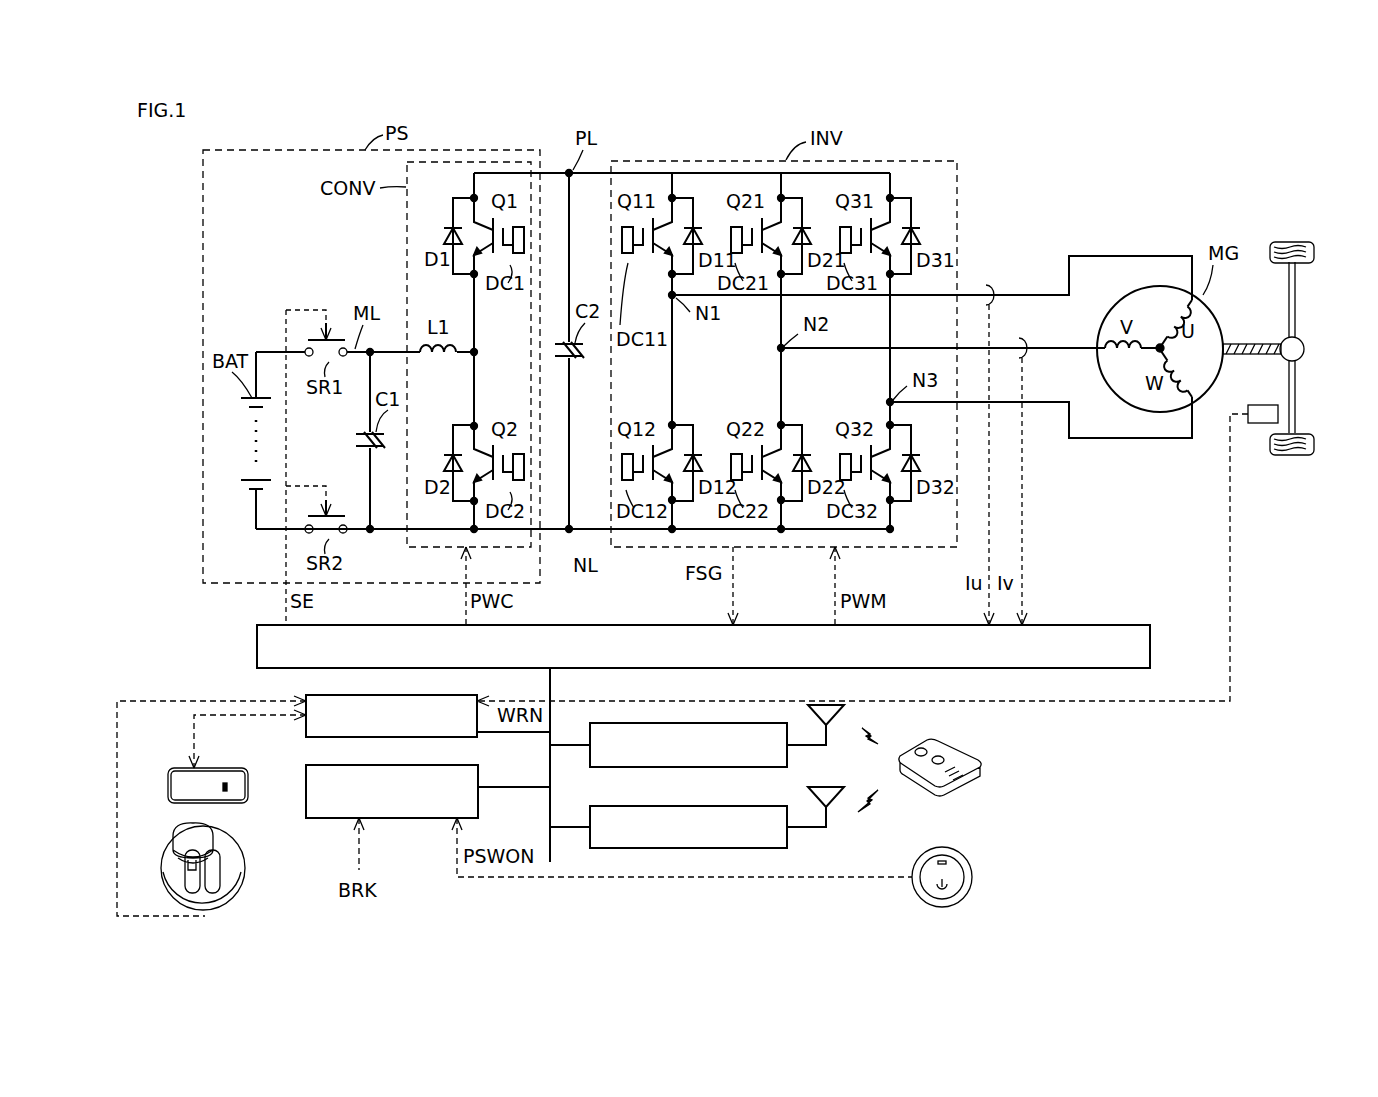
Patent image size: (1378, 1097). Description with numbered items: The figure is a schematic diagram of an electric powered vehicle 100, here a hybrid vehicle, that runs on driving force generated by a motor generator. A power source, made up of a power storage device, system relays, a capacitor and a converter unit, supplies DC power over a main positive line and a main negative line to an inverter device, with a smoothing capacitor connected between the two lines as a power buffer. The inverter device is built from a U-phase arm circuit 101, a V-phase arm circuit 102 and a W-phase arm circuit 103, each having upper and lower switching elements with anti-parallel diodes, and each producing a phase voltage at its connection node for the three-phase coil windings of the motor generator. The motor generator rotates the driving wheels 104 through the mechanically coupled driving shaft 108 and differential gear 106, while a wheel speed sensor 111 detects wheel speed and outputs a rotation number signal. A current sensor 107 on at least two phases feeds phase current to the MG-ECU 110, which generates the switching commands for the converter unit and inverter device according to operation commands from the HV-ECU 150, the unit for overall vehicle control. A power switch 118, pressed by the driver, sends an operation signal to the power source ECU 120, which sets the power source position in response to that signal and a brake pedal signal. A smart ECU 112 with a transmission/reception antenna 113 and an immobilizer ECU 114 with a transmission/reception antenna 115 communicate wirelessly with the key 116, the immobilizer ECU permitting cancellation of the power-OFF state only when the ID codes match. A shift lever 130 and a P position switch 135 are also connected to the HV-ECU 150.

The electric powered vehicle 100 is at (1233, 141).
The U-phase arm circuit 101 is at (666, 306).
The V-phase arm circuit 102 is at (773, 360).
The W-phase arm circuit 103 is at (880, 406).
The driving wheels 104 is at (1286, 242).
The differential gear 106 is at (1306, 349).
The current sensor 107 is at (989, 288).
The driving shaft 108 is at (1248, 344).
The MG-ECU 110 is at (1150, 648).
The wheel speed sensor 111 is at (1261, 405).
The smart ECU 112 is at (742, 723).
The transmission/reception antenna 113 is at (838, 711).
The immobilizer ECU 114 is at (742, 806).
The transmission/reception antenna 115 is at (832, 784).
The key 116 is at (964, 750).
The power switch 118 is at (960, 850).
The power source ECU 120 is at (306, 768).
The shift lever 130 is at (174, 842).
The P position switch 135 is at (178, 768).
The HV-ECU 150 is at (306, 740).